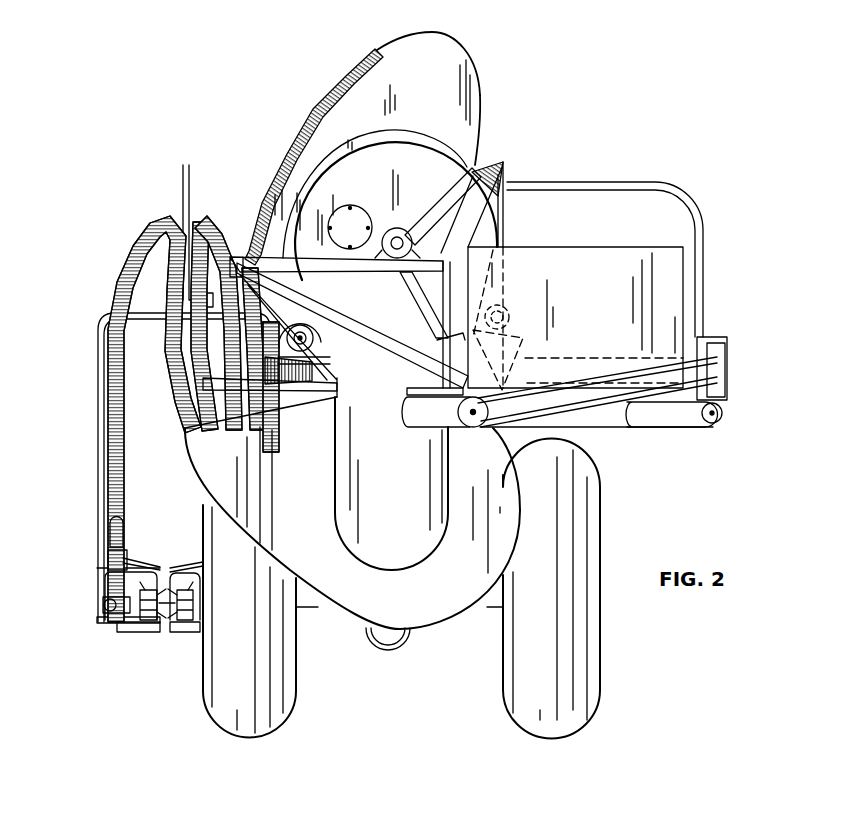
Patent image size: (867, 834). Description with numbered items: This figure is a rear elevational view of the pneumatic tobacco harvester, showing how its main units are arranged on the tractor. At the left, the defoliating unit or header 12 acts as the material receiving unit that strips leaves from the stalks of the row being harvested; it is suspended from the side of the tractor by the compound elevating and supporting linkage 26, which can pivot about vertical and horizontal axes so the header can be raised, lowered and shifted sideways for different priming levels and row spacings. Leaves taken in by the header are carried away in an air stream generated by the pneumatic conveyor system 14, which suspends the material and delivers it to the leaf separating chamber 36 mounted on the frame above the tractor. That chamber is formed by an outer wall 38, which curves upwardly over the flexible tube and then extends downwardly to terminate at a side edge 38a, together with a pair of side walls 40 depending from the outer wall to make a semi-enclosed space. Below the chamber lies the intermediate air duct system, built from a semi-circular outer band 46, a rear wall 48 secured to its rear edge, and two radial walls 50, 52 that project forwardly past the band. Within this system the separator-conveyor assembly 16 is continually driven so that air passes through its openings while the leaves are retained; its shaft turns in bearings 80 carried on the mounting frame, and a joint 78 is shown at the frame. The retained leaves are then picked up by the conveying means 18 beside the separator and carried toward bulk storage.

The defoliating unit or header 12 is at (137, 644).
The pneumatic conveyor system 14 is at (278, 116).
The separator-conveyor assembly 16 is at (482, 236).
The conveying means 18 is at (528, 304).
The compound elevating and supporting linkage 26 is at (89, 311).
The leaf separating chamber 36 is at (469, 44).
The outer wall 38 is at (377, 50).
The side edge 38a is at (470, 163).
The side walls 40 is at (457, 107).
The semi-circular outer band 46 is at (338, 160).
The rear wall 48 is at (396, 211).
The radial wall 50 is at (435, 205).
The radial wall 52 is at (423, 316).
The pivot joint 78 is at (441, 264).
The bearings 80 is at (419, 253).